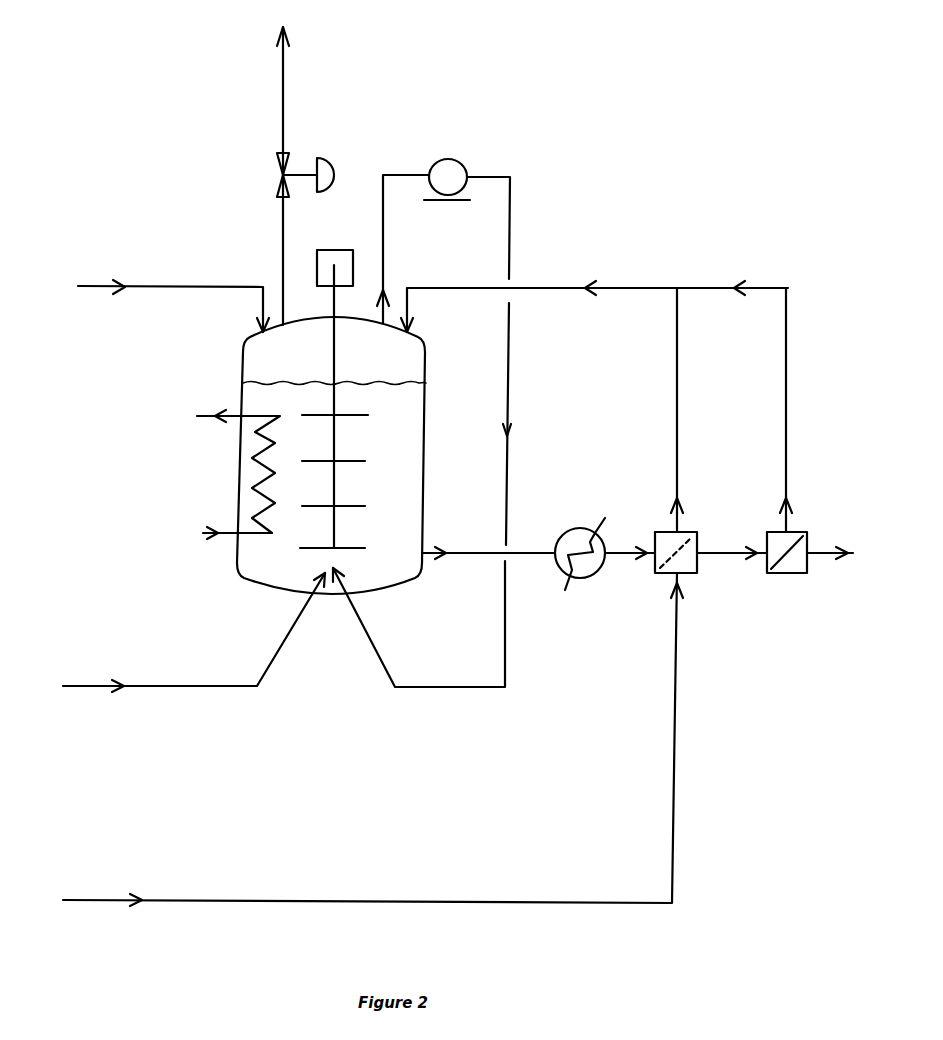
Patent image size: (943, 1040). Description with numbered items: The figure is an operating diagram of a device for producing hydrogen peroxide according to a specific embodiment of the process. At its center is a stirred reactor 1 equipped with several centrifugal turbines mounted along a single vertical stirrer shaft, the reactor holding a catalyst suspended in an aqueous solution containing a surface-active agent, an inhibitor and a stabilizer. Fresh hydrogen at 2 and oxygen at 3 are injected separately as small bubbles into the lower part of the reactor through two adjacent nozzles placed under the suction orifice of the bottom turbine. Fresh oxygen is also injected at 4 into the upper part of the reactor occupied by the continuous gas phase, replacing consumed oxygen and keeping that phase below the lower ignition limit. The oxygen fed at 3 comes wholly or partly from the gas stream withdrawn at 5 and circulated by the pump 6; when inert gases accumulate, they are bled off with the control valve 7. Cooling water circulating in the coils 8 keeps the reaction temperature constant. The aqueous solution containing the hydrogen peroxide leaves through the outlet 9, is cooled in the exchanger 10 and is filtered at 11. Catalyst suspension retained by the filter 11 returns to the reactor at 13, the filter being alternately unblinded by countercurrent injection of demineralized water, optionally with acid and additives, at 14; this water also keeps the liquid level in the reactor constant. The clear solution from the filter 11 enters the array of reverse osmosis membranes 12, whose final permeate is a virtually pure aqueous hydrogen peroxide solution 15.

The stirred reactor 1 is at (340, 422).
The fresh hydrogen injection point 2 is at (174, 637).
The oxygen injection point 3 is at (419, 624).
The fresh oxygen injection point 4 is at (146, 293).
The gas stream withdrawal point 5 is at (444, 360).
The pump 6 is at (447, 165).
The control valve 7 is at (292, 176).
The coils 8 is at (238, 474).
The outlet 9 is at (538, 565).
The exchanger 10 is at (580, 566).
The filter 11 is at (689, 430).
The array of reverse osmosis membranes 12 is at (767, 430).
The catalyst return point 13 is at (594, 306).
The demineralized water injection point 14 is at (385, 739).
The aqueous hydrogen peroxide solution 15 is at (832, 569).